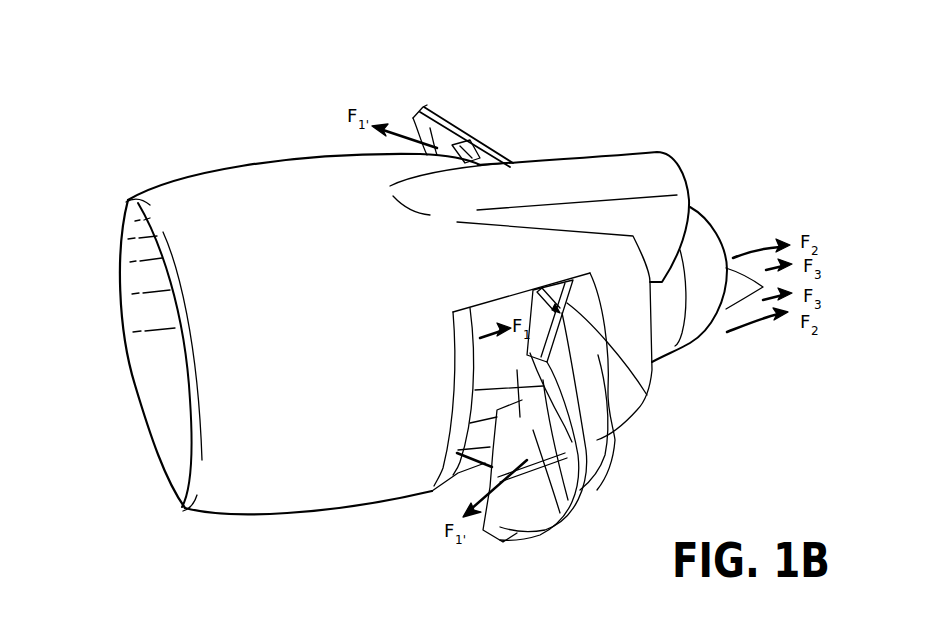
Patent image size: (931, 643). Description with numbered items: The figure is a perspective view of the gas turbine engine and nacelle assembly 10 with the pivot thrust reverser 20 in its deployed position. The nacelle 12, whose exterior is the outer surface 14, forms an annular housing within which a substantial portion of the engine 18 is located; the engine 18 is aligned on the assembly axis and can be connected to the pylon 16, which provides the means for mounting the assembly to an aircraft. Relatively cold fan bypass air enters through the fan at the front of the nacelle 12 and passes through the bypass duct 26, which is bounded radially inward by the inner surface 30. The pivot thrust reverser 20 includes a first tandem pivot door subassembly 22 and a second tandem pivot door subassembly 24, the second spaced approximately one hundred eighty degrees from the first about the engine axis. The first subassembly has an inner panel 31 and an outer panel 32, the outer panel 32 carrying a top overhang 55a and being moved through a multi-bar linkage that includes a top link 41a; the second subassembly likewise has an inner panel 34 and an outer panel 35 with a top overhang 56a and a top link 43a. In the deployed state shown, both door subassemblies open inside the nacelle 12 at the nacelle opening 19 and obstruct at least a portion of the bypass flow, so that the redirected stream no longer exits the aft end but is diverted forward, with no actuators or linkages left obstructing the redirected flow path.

The gas turbine engine and nacelle assembly 10 is at (140, 127).
The nacelle 12 is at (263, 159).
The outer surface of nacelle 14 is at (247, 478).
The pylon 16 is at (630, 173).
The engine 18 is at (705, 178).
The nacelle opening 19 is at (490, 297).
The pivot thrust reverser 20 is at (620, 443).
The first tandem pivot door subassembly 22 is at (575, 490).
The second tandem pivot door subassembly 24 is at (563, 143).
The bypass duct 26 is at (499, 375).
The inner surface of bypass duct 30 is at (590, 280).
The inner panel of first tandem pivot door subassembly 31 is at (560, 500).
The outer panel of first tandem pivot door subassembly 32 is at (520, 493).
The inner panel of second tandem pivot door subassembly 34 is at (456, 140).
The outer panel of second tandem pivot door subassembly 35 is at (437, 150).
The top link 41a is at (647, 395).
The top link 43a is at (511, 156).
The top overhang 55a is at (583, 457).
The top overhang 56a is at (424, 107).